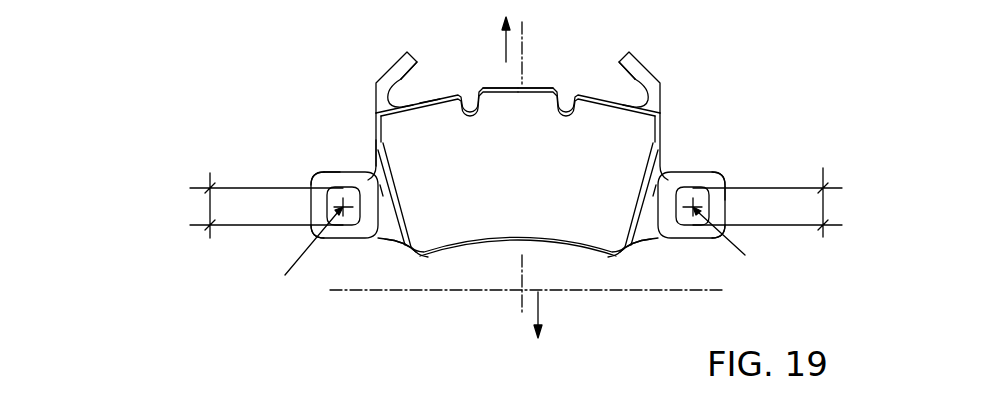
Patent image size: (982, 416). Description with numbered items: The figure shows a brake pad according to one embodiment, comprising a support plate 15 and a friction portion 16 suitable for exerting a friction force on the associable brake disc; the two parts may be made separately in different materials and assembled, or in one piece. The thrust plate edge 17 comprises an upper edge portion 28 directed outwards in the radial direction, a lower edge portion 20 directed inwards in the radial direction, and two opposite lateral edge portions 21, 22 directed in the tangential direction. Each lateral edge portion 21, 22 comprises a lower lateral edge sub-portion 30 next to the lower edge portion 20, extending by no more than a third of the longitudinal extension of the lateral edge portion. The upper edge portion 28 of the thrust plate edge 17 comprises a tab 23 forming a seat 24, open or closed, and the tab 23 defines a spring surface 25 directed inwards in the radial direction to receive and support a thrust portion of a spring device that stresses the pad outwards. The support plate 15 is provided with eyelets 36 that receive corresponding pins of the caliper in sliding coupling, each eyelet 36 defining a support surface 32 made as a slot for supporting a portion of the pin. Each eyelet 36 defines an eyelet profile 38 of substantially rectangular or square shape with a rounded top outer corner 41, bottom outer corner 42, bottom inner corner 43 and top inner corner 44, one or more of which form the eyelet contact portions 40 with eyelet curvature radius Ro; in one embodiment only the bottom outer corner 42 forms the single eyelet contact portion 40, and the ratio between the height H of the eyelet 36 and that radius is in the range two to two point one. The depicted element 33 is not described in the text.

The support plate 15 is at (373, 172).
The friction portion 16 is at (442, 240).
The thrust plate edge 17 is at (543, 87).
The lower edge portion 20 is at (558, 250).
The lateral edge portion 21 is at (662, 143).
The lateral edge portion 22 is at (376, 133).
The tab 23 is at (405, 50).
The seat 24 is at (404, 81).
The spring surface 25 is at (417, 63).
The upper edge portion 28 is at (428, 91).
The lower lateral edge sub-portion 30 is at (336, 172).
The support surface 32 is at (328, 216).
The lower ear edge 33 is at (357, 239).
The eyelet 36 is at (381, 218).
The eyelet profile 38 is at (321, 177).
The eyelet contact portion 40 is at (325, 235).
The top outer corner 41 is at (317, 183).
The bottom outer corner 42 is at (332, 214).
The bottom inner corner 43 is at (364, 236).
The top inner corner 44 is at (378, 193).